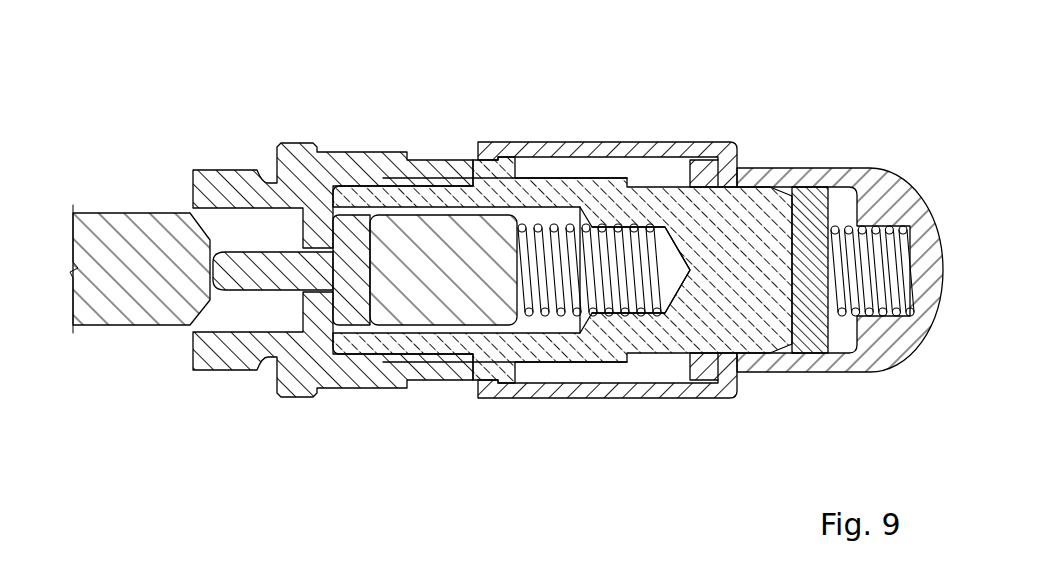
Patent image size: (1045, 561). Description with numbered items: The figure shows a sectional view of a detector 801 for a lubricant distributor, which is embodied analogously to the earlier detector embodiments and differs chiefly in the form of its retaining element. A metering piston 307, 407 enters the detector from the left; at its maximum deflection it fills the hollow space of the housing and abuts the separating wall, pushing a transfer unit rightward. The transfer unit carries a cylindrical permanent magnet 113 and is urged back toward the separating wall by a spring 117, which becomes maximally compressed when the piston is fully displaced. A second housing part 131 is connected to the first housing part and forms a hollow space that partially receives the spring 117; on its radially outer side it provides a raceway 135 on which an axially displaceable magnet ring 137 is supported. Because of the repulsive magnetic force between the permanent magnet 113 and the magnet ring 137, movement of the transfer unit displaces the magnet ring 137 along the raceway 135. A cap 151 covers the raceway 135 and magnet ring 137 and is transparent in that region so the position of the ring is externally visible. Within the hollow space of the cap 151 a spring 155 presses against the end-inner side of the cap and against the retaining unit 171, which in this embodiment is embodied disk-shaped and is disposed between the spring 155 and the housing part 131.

The detector 801 is at (256, 134).
The raceway 135 is at (648, 184).
The cap 151 is at (862, 183).
The metering piston 307 is at (165, 287).
The metering piston 407 is at (165, 287).
The cylindrical permanent magnet 113 is at (415, 308).
The spring 117 is at (577, 315).
The second housing part 131 is at (622, 340).
The magnet ring 137 is at (702, 370).
The retaining unit 171 is at (805, 332).
The spring 155 is at (883, 313).